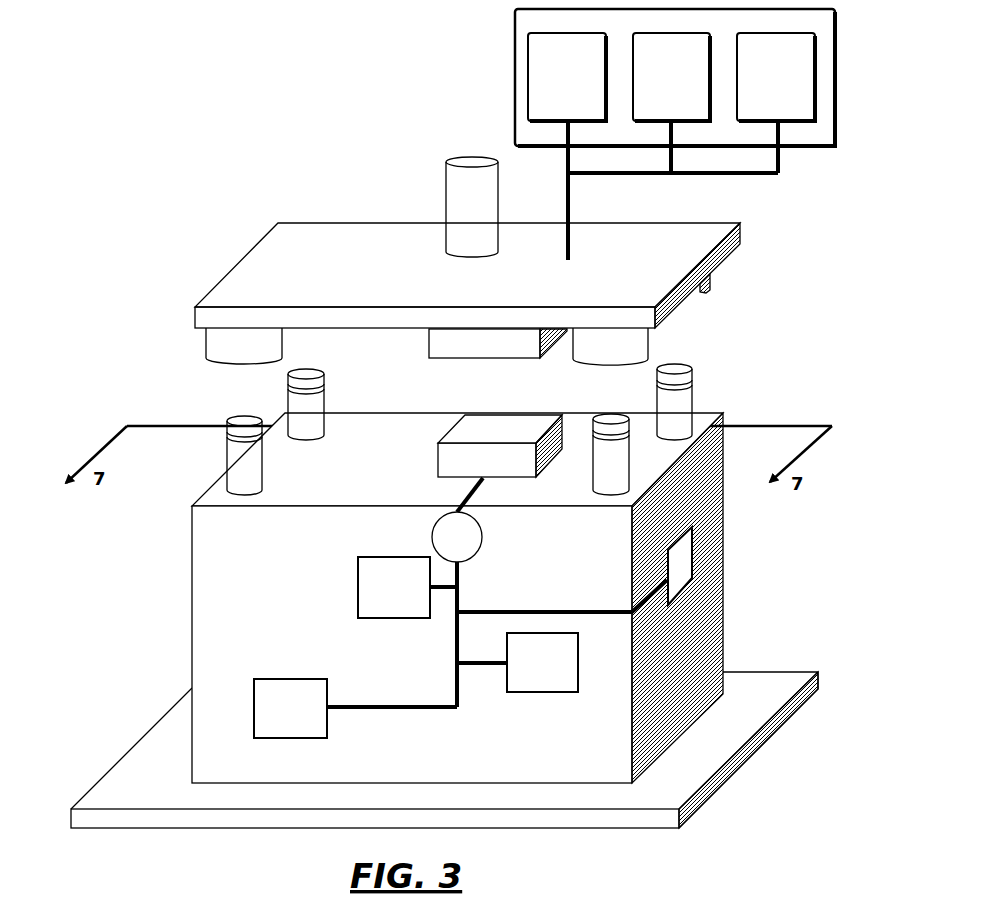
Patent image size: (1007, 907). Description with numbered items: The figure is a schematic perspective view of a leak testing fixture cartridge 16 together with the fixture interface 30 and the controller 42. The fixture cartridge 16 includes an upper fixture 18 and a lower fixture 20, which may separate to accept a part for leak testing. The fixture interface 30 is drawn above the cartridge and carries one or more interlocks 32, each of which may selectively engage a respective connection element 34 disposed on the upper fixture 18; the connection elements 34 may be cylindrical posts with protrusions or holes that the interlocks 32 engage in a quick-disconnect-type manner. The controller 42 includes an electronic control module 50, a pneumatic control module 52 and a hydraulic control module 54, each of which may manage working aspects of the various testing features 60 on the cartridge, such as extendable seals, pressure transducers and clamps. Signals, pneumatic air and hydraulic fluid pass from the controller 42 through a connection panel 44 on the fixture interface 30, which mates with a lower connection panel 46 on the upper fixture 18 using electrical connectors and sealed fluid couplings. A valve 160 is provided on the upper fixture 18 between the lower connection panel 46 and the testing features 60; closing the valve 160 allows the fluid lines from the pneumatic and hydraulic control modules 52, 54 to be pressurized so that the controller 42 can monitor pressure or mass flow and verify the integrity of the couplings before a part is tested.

The fixture cartridge 16 is at (422, 596).
The upper fixture 18 is at (190, 597).
The lower fixture 20 is at (133, 748).
The fixture interface 30 is at (263, 238).
The interlocks 32 is at (206, 343).
The connection elements 34 is at (288, 377).
The controller 42 is at (637, 134).
The connection panel 44 is at (429, 339).
The mating connection panel 46 is at (458, 414).
The electronic control module 50 is at (567, 77).
The pneumatic control module 52 is at (671, 77).
The hydraulic control module 54 is at (776, 77).
The testing features 60 is at (692, 562).
The valve 160 is at (457, 520).